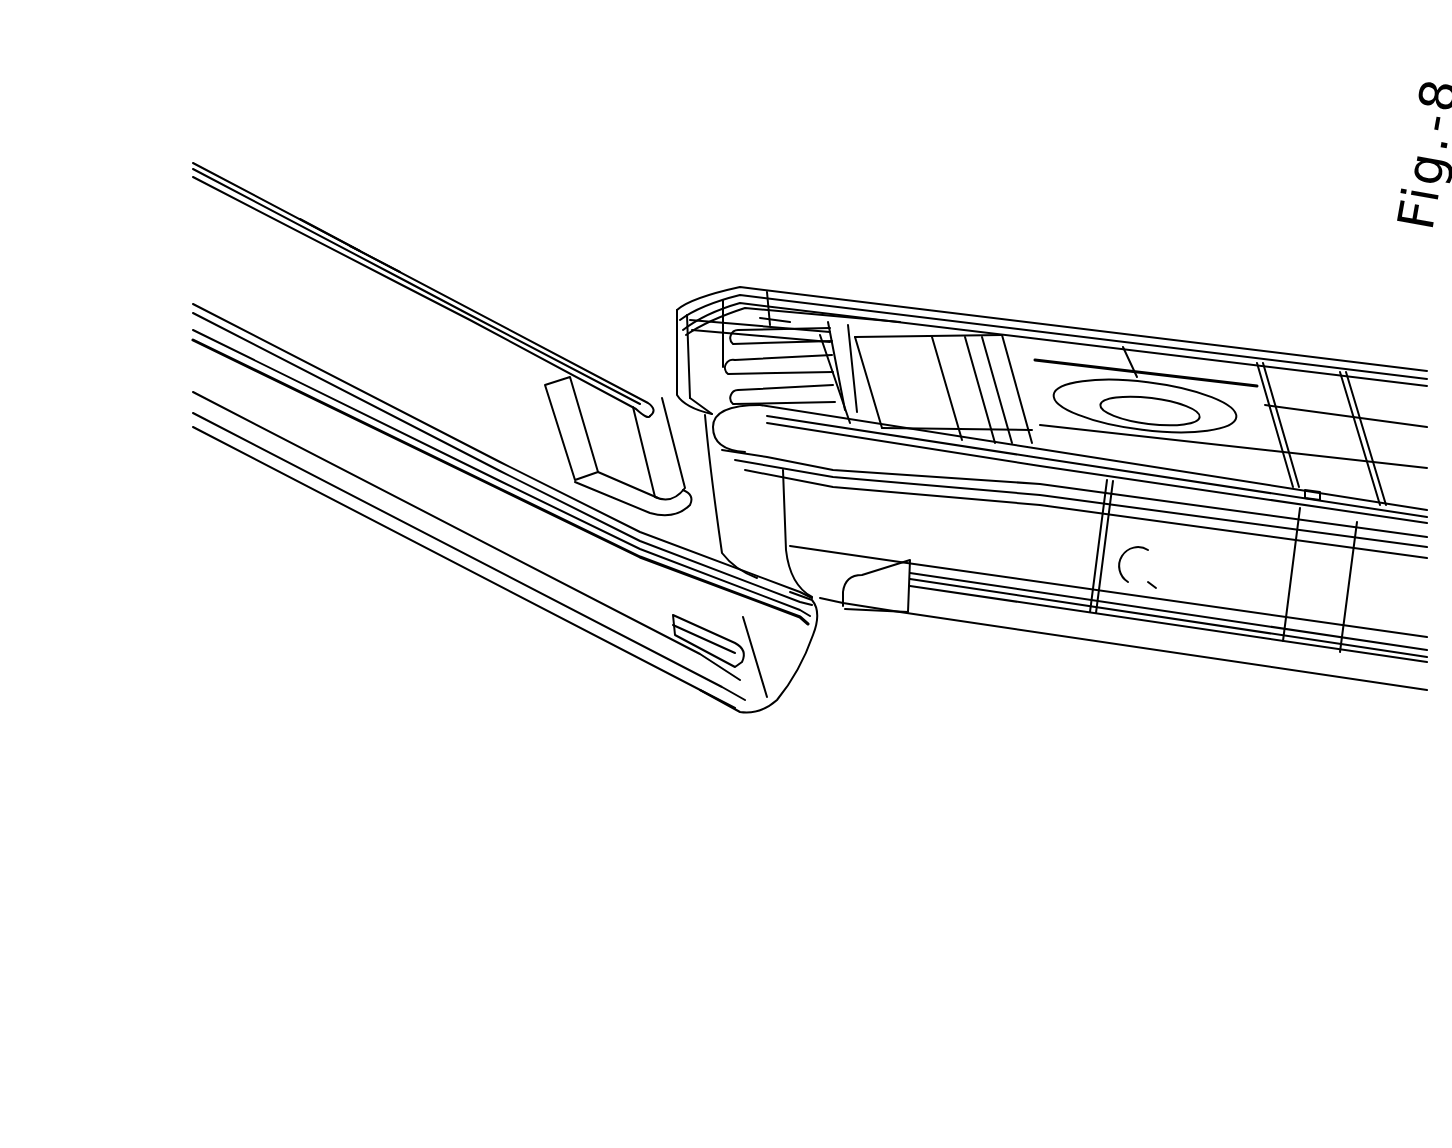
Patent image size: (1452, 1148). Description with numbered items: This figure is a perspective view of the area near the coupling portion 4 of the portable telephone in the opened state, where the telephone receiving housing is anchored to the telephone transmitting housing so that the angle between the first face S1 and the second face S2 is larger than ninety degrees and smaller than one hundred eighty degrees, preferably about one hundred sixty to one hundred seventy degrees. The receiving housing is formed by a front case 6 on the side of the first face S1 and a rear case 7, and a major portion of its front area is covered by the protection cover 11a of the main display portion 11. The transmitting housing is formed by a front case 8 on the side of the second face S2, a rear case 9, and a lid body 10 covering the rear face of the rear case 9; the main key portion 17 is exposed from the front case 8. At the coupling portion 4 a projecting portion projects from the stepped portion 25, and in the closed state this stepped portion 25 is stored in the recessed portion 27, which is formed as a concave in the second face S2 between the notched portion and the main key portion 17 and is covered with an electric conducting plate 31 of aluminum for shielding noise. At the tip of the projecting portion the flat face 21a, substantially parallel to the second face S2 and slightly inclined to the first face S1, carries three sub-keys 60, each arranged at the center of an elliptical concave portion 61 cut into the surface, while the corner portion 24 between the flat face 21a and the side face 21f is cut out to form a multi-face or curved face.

The coupling portion 4 is at (652, 357).
The front case 6 is at (373, 433).
The rear case 7 is at (430, 502).
The front case 8 is at (943, 463).
The rear case 9 is at (1062, 560).
The lid body 10 is at (1177, 647).
The main display portion 11 is at (400, 304).
The protection cover 11a is at (317, 264).
The main key portion 17 is at (1157, 360).
The flat face 21a is at (781, 317).
The side face 21f is at (680, 320).
The corner portion 24 is at (718, 387).
The stepped portion 25 is at (588, 403).
The recessed portion 27 is at (950, 341).
The electric conducting plate 31 is at (930, 360).
The sub-key 60 is at (787, 318).
The concave portion 61 is at (680, 400).
The first face S1 is at (367, 279).
The second face S2 is at (913, 303).